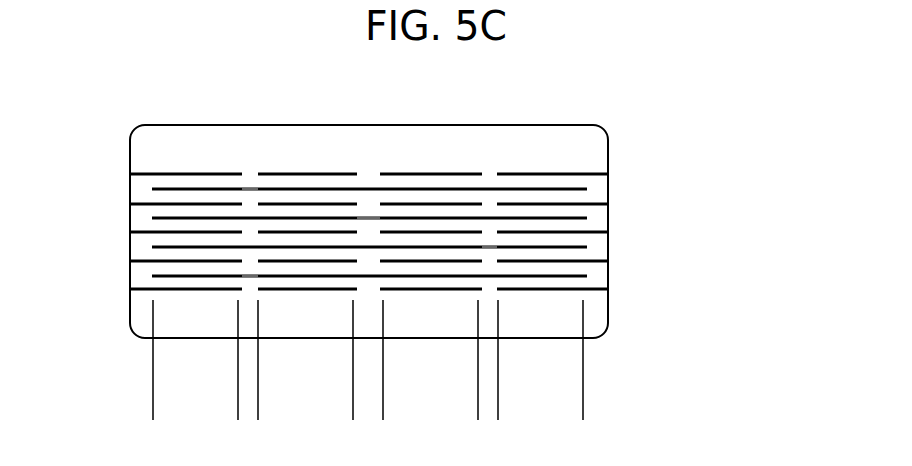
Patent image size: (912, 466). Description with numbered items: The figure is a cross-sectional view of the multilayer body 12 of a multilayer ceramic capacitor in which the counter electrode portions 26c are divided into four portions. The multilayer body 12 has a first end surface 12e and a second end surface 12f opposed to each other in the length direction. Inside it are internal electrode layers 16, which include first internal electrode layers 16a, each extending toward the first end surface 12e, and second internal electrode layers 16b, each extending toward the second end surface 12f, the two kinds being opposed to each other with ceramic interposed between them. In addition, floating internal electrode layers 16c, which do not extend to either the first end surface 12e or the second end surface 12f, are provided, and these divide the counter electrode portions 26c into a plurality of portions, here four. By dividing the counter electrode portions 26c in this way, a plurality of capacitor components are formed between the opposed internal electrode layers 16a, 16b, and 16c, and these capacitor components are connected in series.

The multilayer body 12 is at (122, 92).
The first end surface 12e is at (130, 247).
The second end surface 12f is at (607, 267).
The internal electrode layers 16 is at (451, 203).
The first internal electrode layers 16a is at (130, 174).
The second internal electrode layers 16b is at (590, 230).
The floating internal electrode layers 16c is at (302, 275).
The counter electrode portions 26c is at (583, 414).